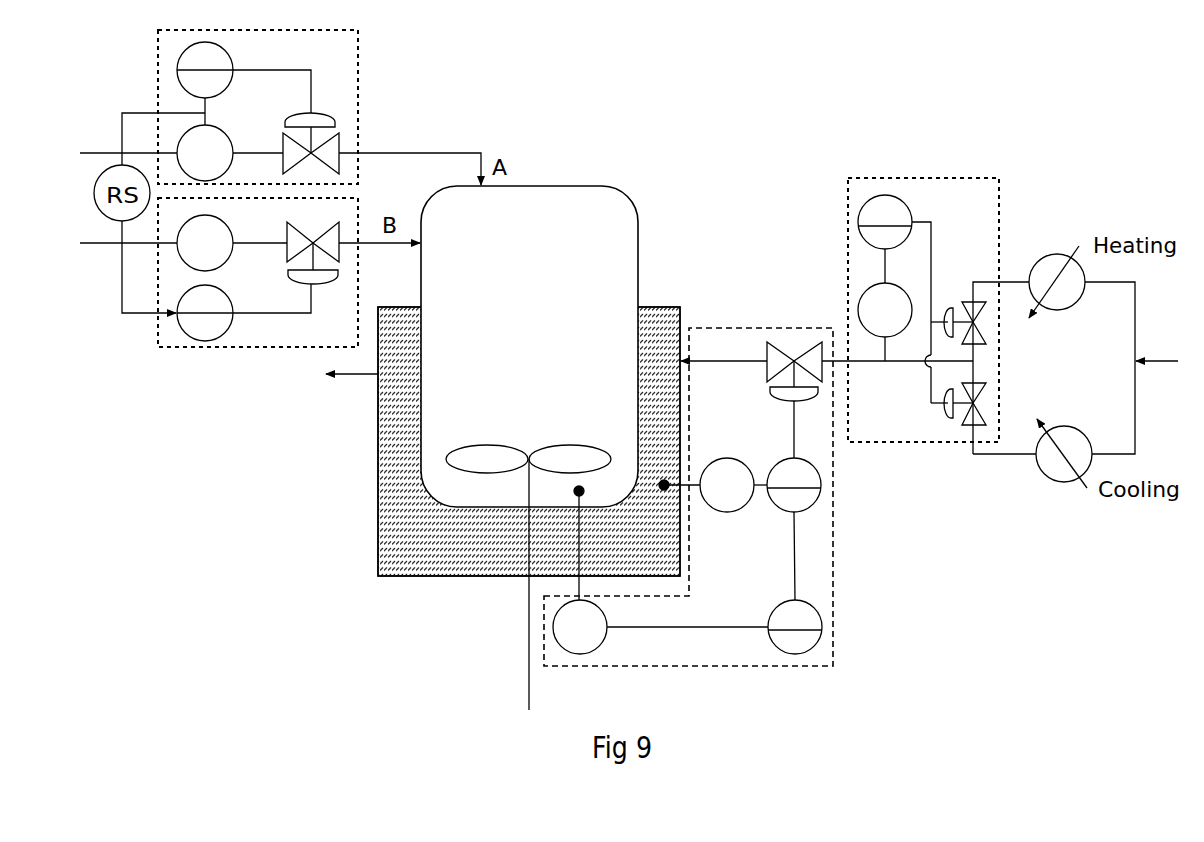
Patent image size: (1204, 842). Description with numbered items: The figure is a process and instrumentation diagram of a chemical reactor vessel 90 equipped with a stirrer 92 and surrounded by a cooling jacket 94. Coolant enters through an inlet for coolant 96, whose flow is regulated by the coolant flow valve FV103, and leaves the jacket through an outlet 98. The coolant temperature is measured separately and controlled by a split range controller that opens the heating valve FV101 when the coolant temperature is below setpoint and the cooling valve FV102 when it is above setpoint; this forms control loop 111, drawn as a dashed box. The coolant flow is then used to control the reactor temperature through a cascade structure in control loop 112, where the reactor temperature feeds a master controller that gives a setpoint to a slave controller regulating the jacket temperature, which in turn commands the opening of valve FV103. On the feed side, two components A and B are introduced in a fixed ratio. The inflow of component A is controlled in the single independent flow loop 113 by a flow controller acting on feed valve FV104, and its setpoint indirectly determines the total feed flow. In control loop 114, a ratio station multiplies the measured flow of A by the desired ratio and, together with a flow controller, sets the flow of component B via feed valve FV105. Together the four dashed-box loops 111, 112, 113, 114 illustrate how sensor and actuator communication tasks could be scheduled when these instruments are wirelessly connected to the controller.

The reactor vessel 90 is at (529, 332).
The stirrer 92 is at (528, 577).
The cooling jacket 94 is at (510, 441).
The inlet for coolant 96 is at (1157, 377).
The outlet 98 is at (352, 389).
The control loop 111 is at (902, 305).
The control loop 112 is at (711, 497).
The control loop 113 is at (219, 102).
The control loop 114 is at (219, 280).
The heating valve FV101 is at (973, 303).
The cooling valve FV102 is at (977, 421).
The coolant flow valve FV103 is at (795, 350).
The feed valve component A FV104 is at (343, 138).
The feed valve component B FV105 is at (283, 265).